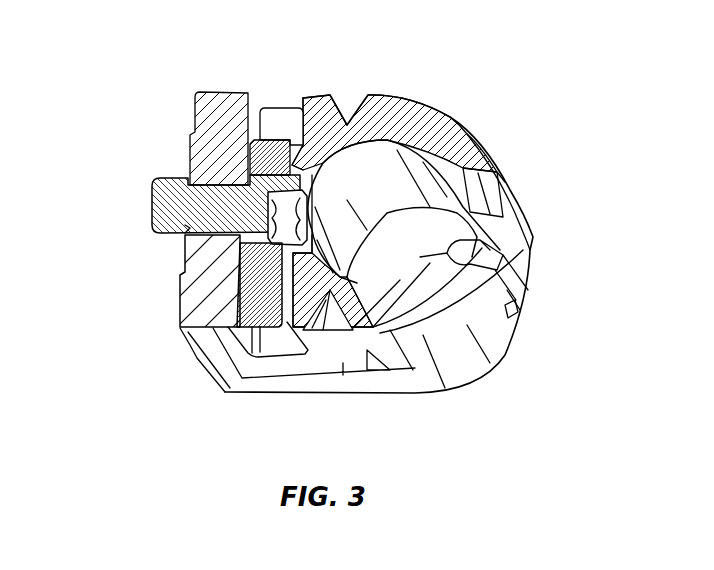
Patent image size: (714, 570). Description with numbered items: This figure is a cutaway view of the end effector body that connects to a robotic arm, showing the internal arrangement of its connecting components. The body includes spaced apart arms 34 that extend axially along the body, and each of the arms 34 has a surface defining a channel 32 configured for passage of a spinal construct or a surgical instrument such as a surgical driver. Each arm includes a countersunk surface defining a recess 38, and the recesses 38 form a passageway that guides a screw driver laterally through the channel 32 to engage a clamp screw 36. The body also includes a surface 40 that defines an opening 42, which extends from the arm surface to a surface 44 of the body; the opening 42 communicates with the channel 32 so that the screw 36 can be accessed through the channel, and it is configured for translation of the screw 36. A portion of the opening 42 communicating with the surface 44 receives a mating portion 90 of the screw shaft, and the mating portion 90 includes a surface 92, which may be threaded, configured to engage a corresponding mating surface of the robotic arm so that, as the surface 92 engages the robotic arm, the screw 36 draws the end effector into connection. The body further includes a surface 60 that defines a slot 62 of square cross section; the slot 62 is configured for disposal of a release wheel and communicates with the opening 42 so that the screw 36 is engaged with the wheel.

The channel 32 is at (397, 250).
The arms 34 is at (420, 120).
The clamp screw 36 is at (187, 210).
The recess 38 is at (463, 190).
The surface 40 is at (222, 178).
The opening 42 is at (234, 183).
The surface 44 is at (182, 253).
The surface 60 is at (273, 348).
The slot 62 is at (262, 88).
The mating portion 90 is at (157, 179).
The surface 92 is at (158, 208).